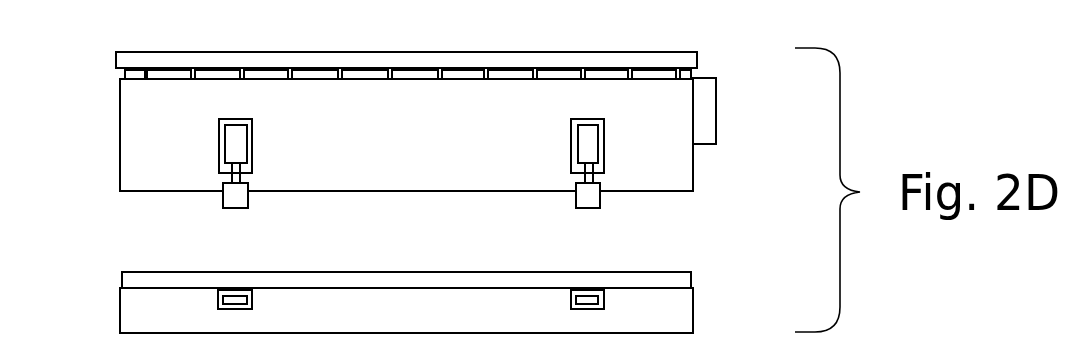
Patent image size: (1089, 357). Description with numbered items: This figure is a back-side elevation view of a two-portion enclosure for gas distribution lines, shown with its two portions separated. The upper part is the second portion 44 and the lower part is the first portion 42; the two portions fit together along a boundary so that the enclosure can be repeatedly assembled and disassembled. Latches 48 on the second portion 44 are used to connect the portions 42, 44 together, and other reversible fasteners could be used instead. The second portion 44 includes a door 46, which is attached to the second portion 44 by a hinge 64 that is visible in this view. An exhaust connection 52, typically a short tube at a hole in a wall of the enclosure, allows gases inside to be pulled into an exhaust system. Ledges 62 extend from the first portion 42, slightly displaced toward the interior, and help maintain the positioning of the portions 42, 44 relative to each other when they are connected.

The first portion 42 is at (676, 316).
The second portion 44 is at (363, 130).
The door 46 is at (501, 65).
The latches 48 is at (590, 147).
The exhaust connection 52 is at (698, 118).
The ledges 62 is at (470, 272).
The hinge 64 is at (128, 73).